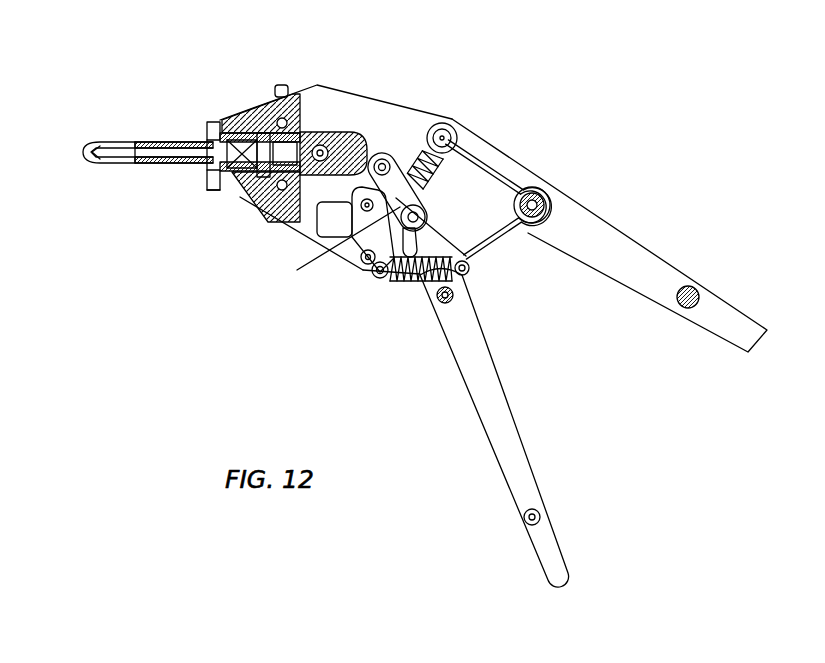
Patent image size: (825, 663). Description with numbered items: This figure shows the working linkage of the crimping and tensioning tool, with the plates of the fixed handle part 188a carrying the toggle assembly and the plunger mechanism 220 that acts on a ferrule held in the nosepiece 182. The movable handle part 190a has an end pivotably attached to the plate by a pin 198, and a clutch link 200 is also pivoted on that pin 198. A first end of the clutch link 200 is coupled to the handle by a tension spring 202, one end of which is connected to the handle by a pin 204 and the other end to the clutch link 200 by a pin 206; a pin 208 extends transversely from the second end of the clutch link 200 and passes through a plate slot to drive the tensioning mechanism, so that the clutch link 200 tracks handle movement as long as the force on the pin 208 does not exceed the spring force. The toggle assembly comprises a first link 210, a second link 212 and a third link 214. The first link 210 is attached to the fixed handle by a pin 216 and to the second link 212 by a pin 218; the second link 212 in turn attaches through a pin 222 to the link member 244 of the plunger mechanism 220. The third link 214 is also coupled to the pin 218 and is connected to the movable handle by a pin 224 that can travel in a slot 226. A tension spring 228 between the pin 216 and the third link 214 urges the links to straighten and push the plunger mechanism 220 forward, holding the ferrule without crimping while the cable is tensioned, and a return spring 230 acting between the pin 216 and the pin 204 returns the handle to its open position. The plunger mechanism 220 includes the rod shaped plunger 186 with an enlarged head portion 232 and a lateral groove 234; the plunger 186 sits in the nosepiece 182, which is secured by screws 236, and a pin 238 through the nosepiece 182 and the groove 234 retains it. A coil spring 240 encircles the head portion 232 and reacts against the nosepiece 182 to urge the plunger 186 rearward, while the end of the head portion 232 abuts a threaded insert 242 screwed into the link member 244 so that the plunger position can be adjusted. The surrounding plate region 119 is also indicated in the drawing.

The plate 119 is at (377, 127).
The nosepiece 182 is at (150, 163).
The plunger 186 is at (135, 142).
The plate 188a is at (640, 263).
The handle part 190a is at (493, 413).
The pin 198 is at (362, 260).
The clutch link 200 is at (352, 237).
The tension spring 202 is at (433, 313).
The pin 204 is at (468, 273).
The pin 206 is at (388, 280).
The pin 208 is at (325, 246).
The first link 210 is at (415, 135).
The second link 212 is at (353, 150).
The third link 214 is at (398, 188).
The pin 216 is at (458, 130).
The pin 218 is at (338, 195).
The plunger mechanism 220 is at (243, 112).
The pin 222 is at (327, 132).
The pin 224 is at (426, 217).
The slot 226 is at (407, 240).
The tension spring 228 is at (517, 150).
The return spring 230 is at (536, 186).
The head portion 232 is at (252, 208).
The lateral groove 234 is at (220, 117).
The screws 236 is at (205, 188).
The pin 238 is at (203, 143).
The coil spring 240 is at (200, 182).
The threaded insert 242 is at (272, 110).
The link member 244 is at (288, 215).